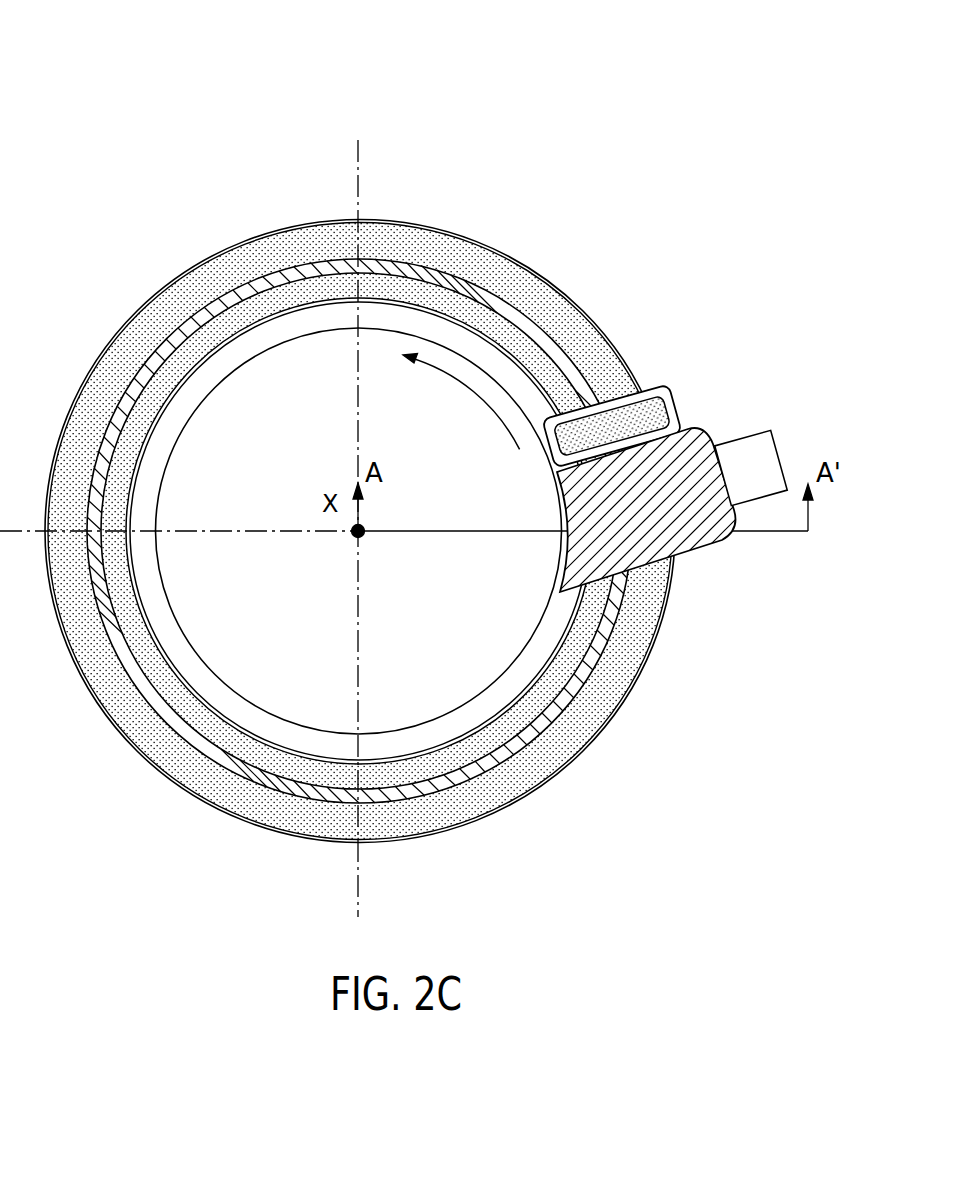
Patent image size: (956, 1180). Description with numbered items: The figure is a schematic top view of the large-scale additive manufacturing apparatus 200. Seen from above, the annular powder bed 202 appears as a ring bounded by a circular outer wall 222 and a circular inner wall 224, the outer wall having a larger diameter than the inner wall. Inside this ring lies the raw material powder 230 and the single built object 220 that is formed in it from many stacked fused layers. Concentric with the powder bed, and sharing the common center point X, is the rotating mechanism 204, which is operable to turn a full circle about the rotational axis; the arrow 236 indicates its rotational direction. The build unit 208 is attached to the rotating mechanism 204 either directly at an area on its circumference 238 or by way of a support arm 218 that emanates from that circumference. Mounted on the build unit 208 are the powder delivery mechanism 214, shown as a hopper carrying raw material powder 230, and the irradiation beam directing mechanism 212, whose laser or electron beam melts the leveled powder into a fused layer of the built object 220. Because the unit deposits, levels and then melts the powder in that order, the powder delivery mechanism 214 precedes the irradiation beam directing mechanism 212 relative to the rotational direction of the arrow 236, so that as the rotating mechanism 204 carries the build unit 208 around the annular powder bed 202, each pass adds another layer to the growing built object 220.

The large-scale additive manufacturing apparatus 200 is at (110, 85).
The annular powder bed 202 is at (78, 314).
The rotating mechanism 204 is at (390, 352).
The build unit 208 is at (845, 320).
The irradiation beam directing mechanism 212 is at (779, 457).
The powder delivery mechanism 214 is at (670, 385).
The support arm 218 is at (712, 438).
The built object 220 is at (538, 322).
The circular outer wall 222 is at (85, 377).
The circular inner wall 224 is at (133, 473).
The raw material powder 230 is at (597, 353).
The arrow indicating rotational direction 236 is at (487, 403).
The circumference of the rotating mechanism 238 is at (263, 306).